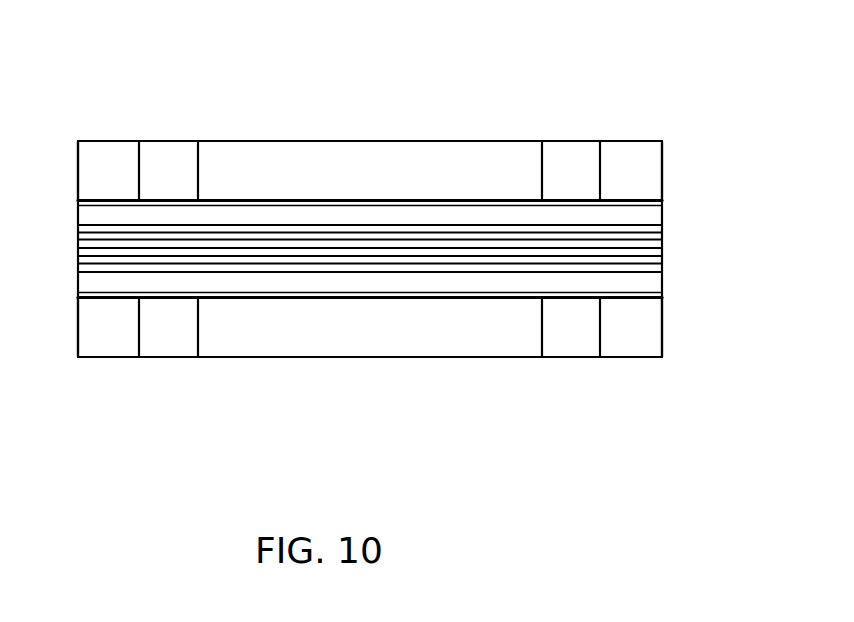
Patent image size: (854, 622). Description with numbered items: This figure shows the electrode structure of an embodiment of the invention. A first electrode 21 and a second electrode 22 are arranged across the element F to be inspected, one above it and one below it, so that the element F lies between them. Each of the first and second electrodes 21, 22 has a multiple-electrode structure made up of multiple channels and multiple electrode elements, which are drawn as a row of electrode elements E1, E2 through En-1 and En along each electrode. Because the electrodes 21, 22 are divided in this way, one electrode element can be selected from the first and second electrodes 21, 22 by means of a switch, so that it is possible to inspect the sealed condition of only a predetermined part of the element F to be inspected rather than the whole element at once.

The first electrode 21 is at (474, 117).
The second electrode 22 is at (403, 381).
The element to be inspected F is at (663, 210).
The electrode element E1 is at (109, 153).
The electrode element E2 is at (170, 153).
The electrode element En-1 is at (571, 150).
The electrode element En is at (638, 150).